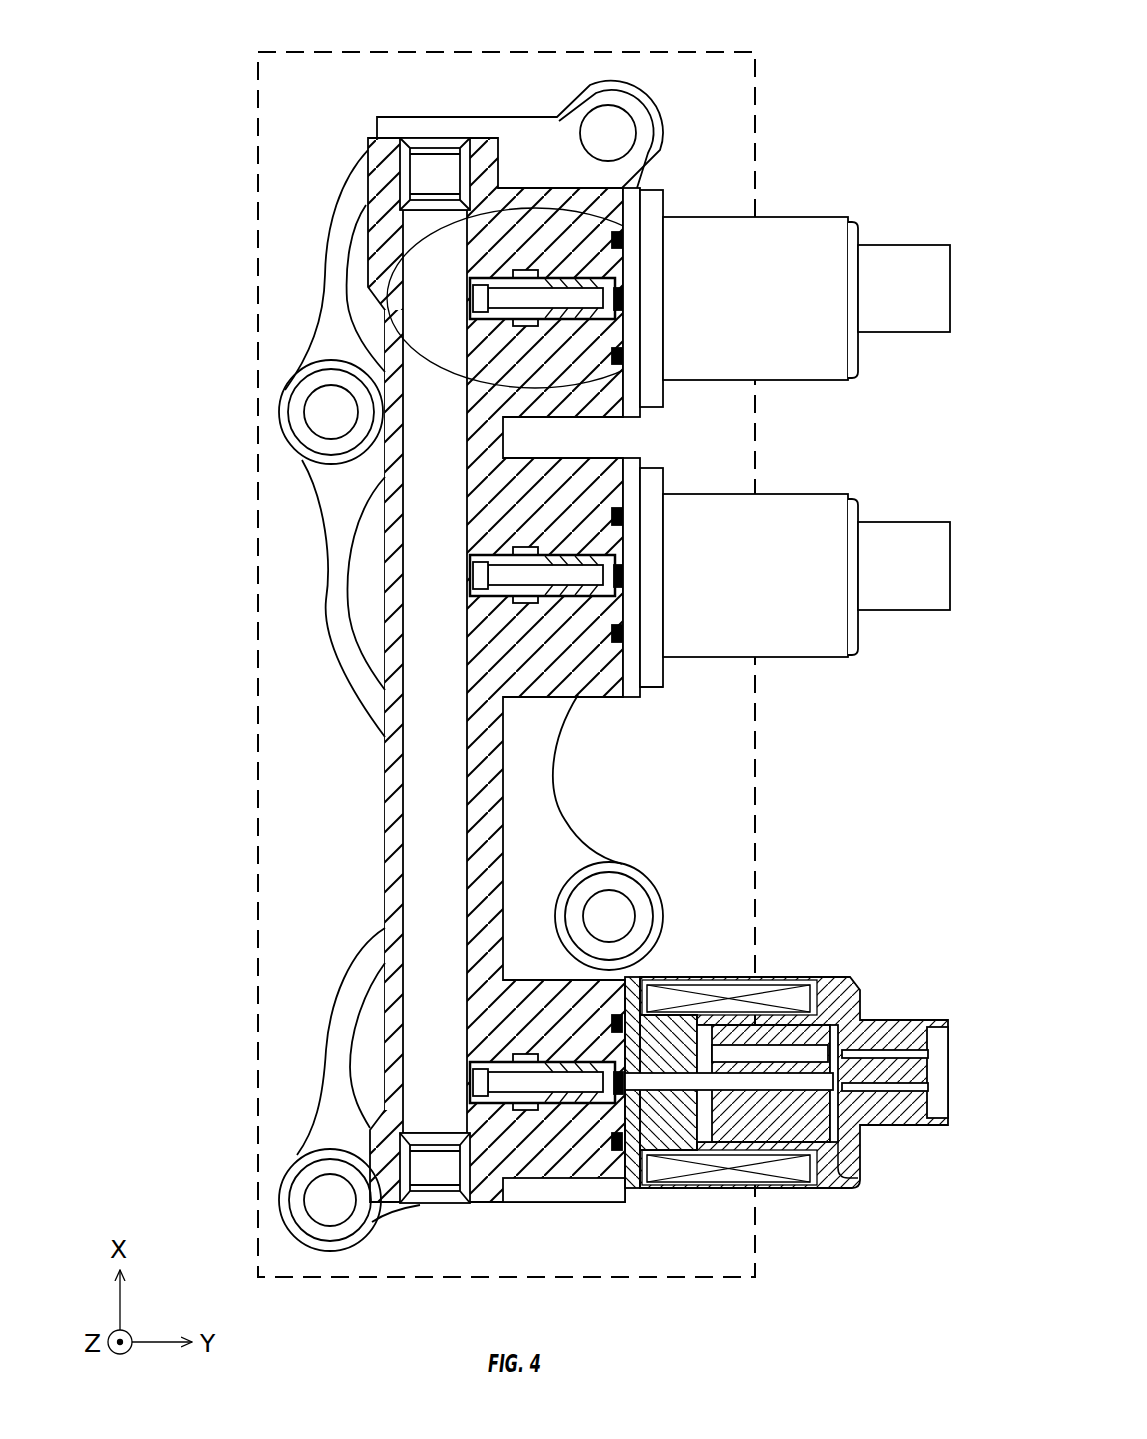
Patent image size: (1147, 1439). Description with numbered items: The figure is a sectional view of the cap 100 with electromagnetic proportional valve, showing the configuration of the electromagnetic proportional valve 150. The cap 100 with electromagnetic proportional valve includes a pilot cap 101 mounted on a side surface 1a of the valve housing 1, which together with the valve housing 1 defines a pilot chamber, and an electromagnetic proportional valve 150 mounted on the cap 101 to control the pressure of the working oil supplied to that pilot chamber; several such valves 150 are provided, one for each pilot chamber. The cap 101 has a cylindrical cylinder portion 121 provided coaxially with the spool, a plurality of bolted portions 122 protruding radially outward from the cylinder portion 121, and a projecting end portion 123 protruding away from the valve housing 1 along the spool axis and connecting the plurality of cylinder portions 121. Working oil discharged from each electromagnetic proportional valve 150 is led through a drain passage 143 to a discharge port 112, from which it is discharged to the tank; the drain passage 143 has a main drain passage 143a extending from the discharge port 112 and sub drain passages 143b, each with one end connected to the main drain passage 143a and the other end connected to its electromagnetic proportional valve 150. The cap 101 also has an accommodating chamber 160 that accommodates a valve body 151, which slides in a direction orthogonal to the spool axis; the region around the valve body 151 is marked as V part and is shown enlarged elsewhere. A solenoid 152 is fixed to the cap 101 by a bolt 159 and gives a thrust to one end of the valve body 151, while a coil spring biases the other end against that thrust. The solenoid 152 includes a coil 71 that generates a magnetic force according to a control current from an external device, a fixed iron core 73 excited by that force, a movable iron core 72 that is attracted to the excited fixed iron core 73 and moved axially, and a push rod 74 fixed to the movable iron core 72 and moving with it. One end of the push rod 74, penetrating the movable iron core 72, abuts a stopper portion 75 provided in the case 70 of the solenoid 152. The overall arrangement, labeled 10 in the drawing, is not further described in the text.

The valve housing 1 is at (758, 805).
The side surface 1a is at (452, 97).
The brake system 10 is at (800, 84).
The cap with electromagnetic proportional valve 100 is at (341, 115).
The pilot cap 101 is at (383, 770).
The discharge port 112 is at (433, 1207).
The cylinder portion 121 is at (328, 227).
The bolted portion 122 is at (645, 93).
The projecting end portion 123 is at (366, 155).
The drain passage 143 is at (361, 691).
The main drain passage 143a is at (403, 1012).
The sub drain passage 143b is at (465, 290).
The electromagnetic proportional valve 150 is at (800, 724).
The valve body 151 is at (642, 222).
The solenoid 152 is at (820, 384).
The bolt 159 is at (665, 678).
The accommodating chamber 160 is at (622, 232).
The case 70 is at (786, 1080).
The coil 71 is at (772, 1000).
The movable iron core 72 is at (800, 1030).
The fixed iron core 73 is at (698, 1017).
The push rod 74 is at (668, 1097).
The stopper portion 75 is at (815, 1135).
The V part V is at (682, 297).